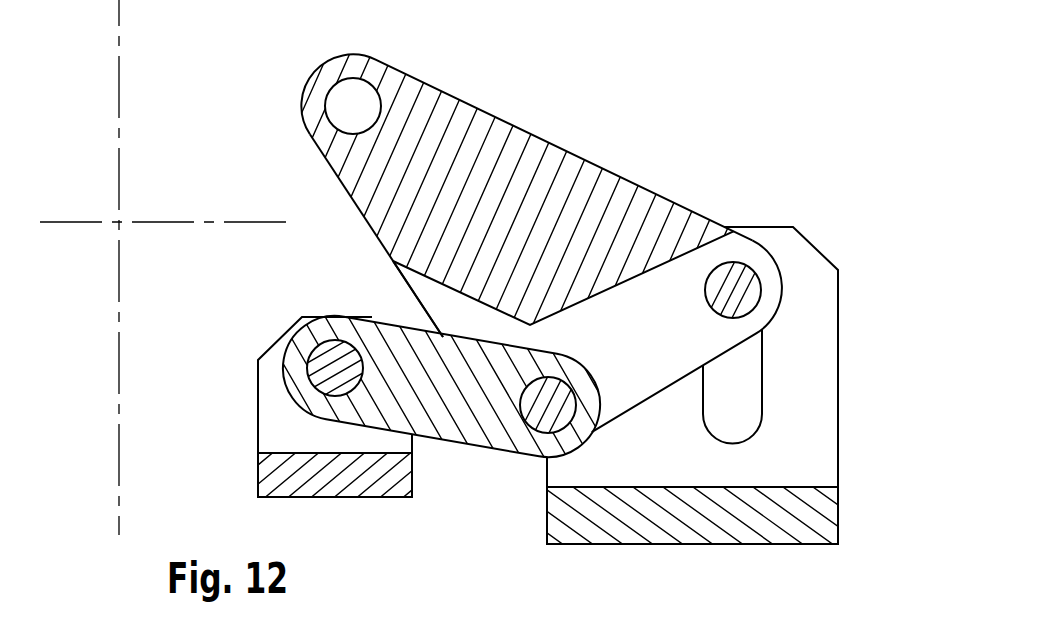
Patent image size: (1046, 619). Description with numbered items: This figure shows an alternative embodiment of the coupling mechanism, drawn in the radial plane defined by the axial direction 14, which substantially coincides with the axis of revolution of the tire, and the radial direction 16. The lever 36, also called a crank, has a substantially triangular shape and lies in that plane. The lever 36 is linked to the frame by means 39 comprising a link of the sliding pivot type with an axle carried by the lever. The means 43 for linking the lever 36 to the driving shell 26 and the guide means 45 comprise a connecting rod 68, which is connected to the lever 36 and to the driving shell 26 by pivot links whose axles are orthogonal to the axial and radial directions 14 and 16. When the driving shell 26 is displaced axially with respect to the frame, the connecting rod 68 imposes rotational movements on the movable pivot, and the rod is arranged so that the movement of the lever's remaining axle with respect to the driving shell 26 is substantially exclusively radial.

The axial direction 14 is at (119, 113).
The radial direction 16 is at (170, 222).
The lever 36 is at (485, 157).
The means for linking the lever to the driving shell 43 is at (793, 272).
The guide means 45 is at (397, 315).
The driving shell 26 is at (307, 478).
The connecting rod 68 is at (474, 407).
The means for linking the lever to the frame 39 is at (527, 468).